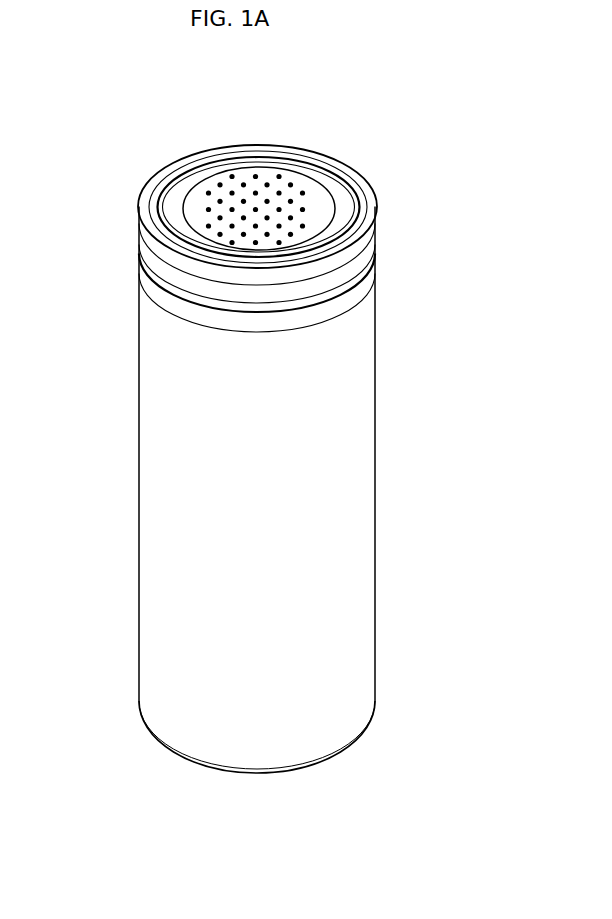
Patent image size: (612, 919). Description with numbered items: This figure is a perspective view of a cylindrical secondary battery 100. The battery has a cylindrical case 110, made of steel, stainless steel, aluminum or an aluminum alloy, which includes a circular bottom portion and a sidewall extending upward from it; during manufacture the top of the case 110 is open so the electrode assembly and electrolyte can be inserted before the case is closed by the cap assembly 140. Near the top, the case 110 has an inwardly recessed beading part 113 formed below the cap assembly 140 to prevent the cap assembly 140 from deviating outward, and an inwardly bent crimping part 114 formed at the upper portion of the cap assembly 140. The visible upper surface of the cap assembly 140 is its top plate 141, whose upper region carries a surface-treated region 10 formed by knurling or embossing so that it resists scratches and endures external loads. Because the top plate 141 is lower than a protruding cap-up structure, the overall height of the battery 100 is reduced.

The cylindrical secondary battery 100 is at (91, 77).
The case 110 is at (390, 486).
The beading part 113 is at (364, 279).
The crimping part 114 is at (359, 200).
The surface-treated region 10 is at (187, 173).
The cap assembly 140 is at (264, 175).
The top plate 141 is at (293, 207).